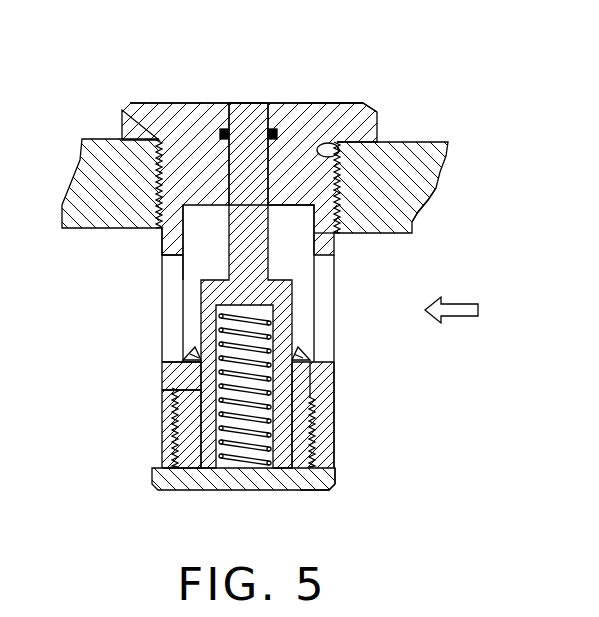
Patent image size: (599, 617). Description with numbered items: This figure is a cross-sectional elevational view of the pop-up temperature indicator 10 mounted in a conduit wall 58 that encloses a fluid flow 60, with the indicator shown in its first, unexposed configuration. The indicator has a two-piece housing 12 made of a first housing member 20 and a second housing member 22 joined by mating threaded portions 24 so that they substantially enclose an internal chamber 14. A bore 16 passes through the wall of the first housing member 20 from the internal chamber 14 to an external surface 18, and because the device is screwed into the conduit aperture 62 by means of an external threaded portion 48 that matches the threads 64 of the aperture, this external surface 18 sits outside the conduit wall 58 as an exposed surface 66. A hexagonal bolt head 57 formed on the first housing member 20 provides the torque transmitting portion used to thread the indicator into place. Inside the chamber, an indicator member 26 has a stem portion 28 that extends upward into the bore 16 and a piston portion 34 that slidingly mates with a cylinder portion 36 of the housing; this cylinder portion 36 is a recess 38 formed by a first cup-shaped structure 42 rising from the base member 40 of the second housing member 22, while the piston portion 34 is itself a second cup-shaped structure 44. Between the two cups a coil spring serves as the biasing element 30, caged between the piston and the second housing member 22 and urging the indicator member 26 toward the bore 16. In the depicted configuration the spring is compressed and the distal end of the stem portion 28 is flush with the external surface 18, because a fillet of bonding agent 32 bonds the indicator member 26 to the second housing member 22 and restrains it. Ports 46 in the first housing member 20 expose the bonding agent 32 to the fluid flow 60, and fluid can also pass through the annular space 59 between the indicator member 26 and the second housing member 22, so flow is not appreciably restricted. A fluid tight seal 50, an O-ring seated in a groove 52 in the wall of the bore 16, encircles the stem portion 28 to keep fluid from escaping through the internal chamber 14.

The pop-up temperature indicator 10 is at (314, 104).
The housing 12 is at (344, 376).
The internal chamber 14 is at (287, 262).
The bore 16 is at (252, 106).
The external surface 18 is at (140, 103).
The first housing member 20 is at (164, 244).
The second housing member 22 is at (188, 482).
The mating threaded portions 24 is at (176, 430).
The indicator member 26 is at (217, 267).
The stem portion 28 is at (248, 152).
The biasing element 30 is at (248, 453).
The bonding agent 32 is at (193, 353).
The piston portion 34 is at (290, 373).
The cylinder portion 36 is at (298, 438).
The recess 38 is at (268, 400).
The base member 40 is at (300, 492).
The first cup-shaped structure 42 is at (190, 404).
The second cup-shaped structure 44 is at (207, 364).
The ports 46 is at (165, 308).
The external threaded portion 48 is at (420, 206).
The fluid tight seal 50 is at (217, 130).
The groove 52 is at (273, 130).
The hexagonal bolt head 57 is at (348, 110).
The conduit wall 58 is at (425, 167).
The annular space 59 is at (275, 240).
The fluid flow 60 is at (463, 318).
The conduit aperture 62 is at (340, 132).
The threads 64 is at (152, 170).
The exposed surface 66 is at (330, 103).